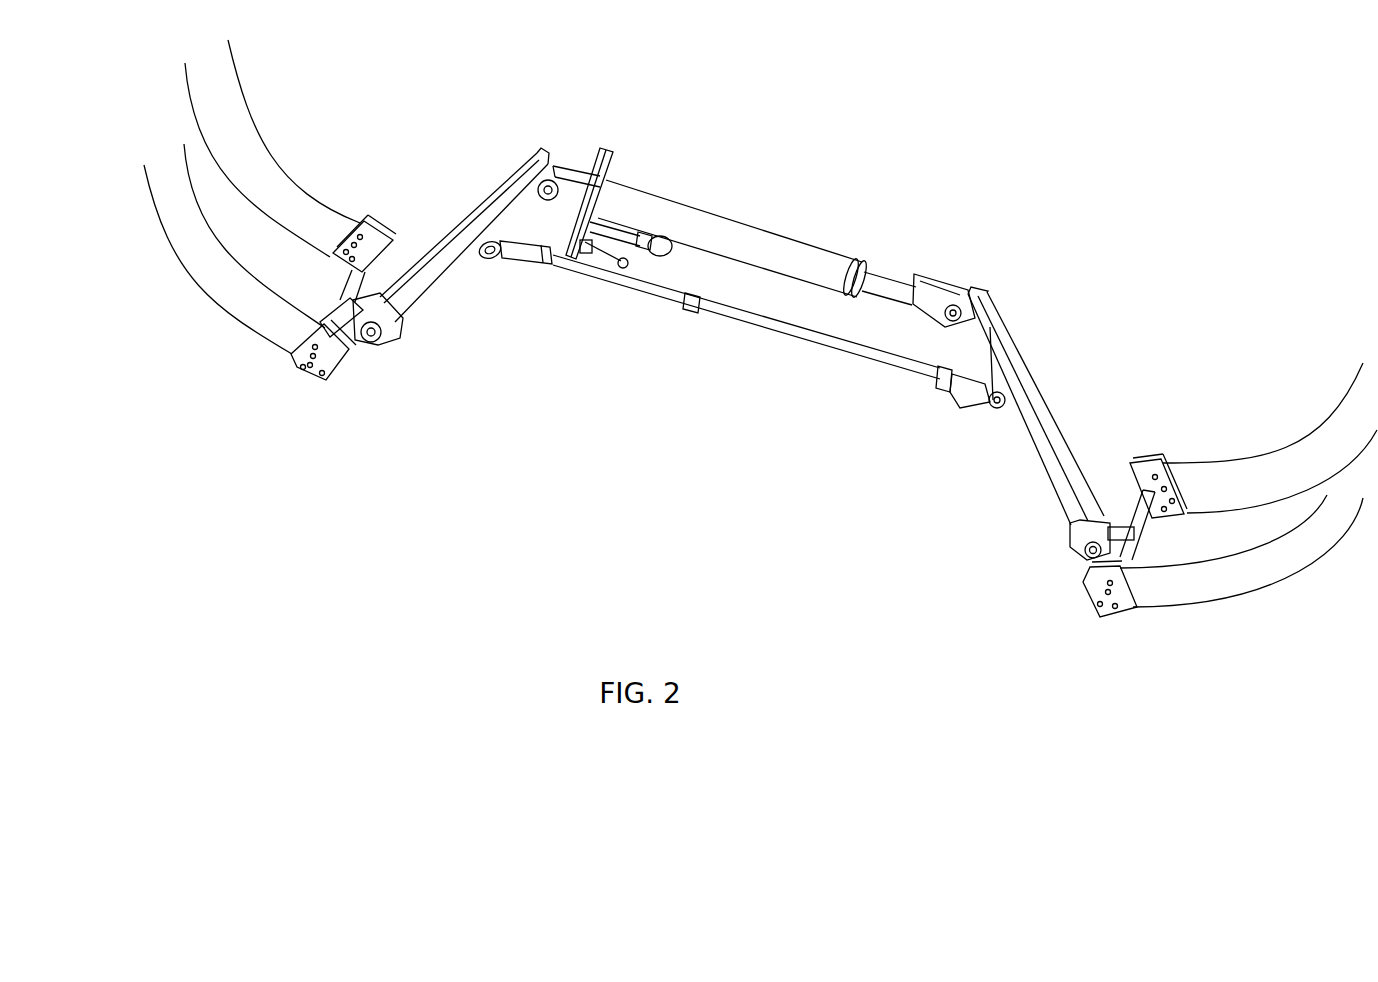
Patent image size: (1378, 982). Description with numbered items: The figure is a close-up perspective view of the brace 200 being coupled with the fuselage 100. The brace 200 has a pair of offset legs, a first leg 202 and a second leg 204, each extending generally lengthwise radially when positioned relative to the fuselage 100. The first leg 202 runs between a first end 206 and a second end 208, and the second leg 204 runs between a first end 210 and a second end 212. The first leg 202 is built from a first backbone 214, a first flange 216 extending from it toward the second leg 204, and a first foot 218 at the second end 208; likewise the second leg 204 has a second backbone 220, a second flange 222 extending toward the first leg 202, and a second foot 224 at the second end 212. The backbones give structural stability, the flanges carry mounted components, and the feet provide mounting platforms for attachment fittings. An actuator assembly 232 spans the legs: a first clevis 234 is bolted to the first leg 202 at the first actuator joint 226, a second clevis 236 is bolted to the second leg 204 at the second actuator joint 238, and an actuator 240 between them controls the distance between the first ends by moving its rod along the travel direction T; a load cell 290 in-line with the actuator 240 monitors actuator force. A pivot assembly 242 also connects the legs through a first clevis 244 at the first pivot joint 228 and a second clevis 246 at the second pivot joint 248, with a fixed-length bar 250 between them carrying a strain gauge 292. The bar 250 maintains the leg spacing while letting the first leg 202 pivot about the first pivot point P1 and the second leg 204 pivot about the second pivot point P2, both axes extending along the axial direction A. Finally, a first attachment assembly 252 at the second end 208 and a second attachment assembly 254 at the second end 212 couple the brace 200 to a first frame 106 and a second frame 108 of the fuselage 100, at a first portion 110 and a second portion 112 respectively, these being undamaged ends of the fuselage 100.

The fuselage 100 is at (330, 113).
The first frame 106 is at (244, 314).
The second frame 108 is at (236, 113).
The first portion 110 is at (273, 428).
The second portion 112 is at (1073, 663).
The brace 200 is at (852, 113).
The first leg 202 is at (480, 200).
The second leg 204 is at (1012, 344).
The first end 206 is at (532, 151).
The second end 208 is at (395, 352).
The first end 210 is at (1000, 287).
The second end 212 is at (1057, 566).
The first backbone 214 is at (450, 241).
The first flange 216 is at (437, 284).
The first foot 218 is at (378, 342).
The second backbone 220 is at (1052, 437).
The second flange 222 is at (1036, 462).
The second foot 224 is at (1070, 541).
The first actuator joint 226 is at (563, 156).
The first pivot joint 228 is at (500, 266).
The actuator assembly 232 is at (848, 240).
The first clevis 234 is at (582, 165).
The second clevis 236 is at (917, 275).
The second actuator joint 238 is at (962, 282).
The actuator 240 is at (640, 200).
The pivot assembly 242 is at (746, 343).
The first clevis 244 is at (558, 265).
The second clevis 246 is at (963, 395).
The second pivot joint 248 is at (1010, 393).
The bar 250 is at (820, 345).
The first attachment assembly 252 is at (364, 208).
The second attachment assembly 254 is at (1161, 450).
The load cell 290 is at (876, 268).
The strain gauge 292 is at (688, 306).
The first pivot point P1 is at (491, 266).
The second pivot point P2 is at (1003, 411).
The travel direction T is at (800, 225).
The axial direction A is at (605, 471).